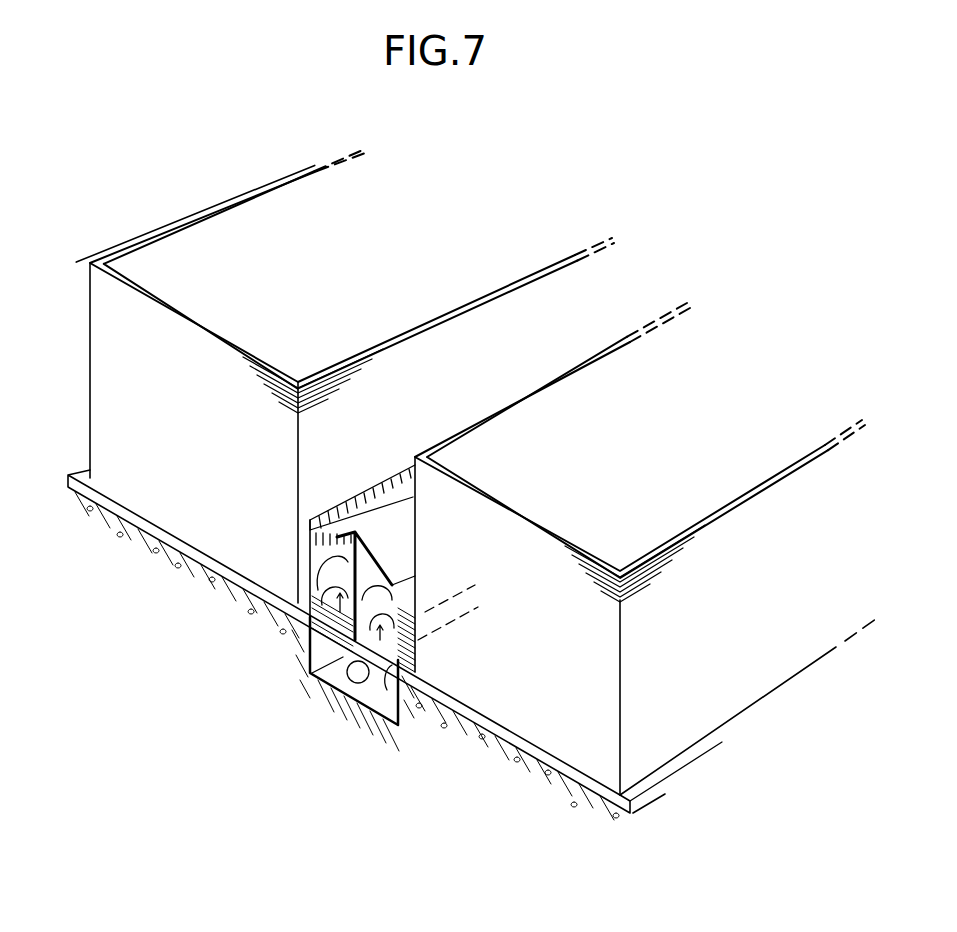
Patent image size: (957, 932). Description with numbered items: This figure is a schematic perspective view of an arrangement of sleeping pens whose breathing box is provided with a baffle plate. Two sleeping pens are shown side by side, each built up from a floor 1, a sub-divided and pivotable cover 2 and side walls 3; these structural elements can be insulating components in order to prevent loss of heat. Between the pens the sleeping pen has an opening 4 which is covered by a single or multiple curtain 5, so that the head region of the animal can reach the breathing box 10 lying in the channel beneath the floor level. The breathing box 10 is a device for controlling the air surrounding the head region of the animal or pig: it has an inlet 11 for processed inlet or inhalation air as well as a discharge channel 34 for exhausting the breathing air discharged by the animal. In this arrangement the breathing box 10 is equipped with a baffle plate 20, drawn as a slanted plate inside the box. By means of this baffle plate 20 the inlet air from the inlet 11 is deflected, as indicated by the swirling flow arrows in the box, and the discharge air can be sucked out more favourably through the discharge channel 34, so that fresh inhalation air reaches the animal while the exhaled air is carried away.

The floor 1 is at (140, 527).
The cover 2 is at (170, 248).
The side walls 3 is at (412, 348).
The opening 4 is at (342, 502).
The curtain 5 is at (392, 482).
The breathing box 10 is at (350, 712).
The inlet 11 is at (330, 700).
The baffle plate 20 is at (402, 552).
The discharge channel 34 is at (315, 660).